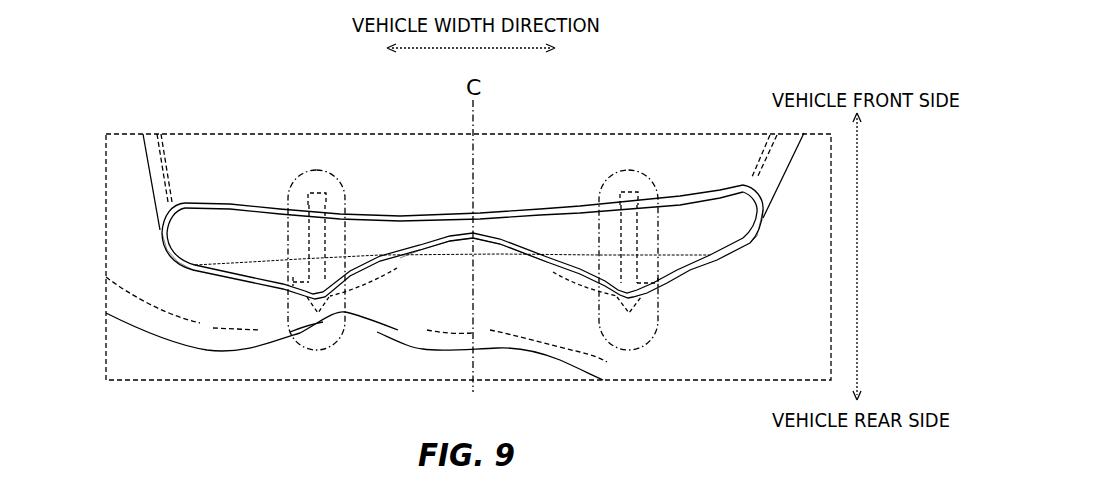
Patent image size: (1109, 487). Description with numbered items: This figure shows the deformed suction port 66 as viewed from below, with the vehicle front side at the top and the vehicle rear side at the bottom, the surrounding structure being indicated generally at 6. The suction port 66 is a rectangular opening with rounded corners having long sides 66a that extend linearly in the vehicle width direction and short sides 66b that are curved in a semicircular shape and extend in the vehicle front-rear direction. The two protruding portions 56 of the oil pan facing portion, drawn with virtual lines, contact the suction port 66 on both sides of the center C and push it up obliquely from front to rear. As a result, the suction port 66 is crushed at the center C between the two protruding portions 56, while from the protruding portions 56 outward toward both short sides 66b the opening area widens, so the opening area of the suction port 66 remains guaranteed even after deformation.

The vehicle body 6 is at (140, 170).
The protruding portion 56 is at (322, 170).
The suction port 66 is at (186, 272).
The long side 66a is at (458, 217).
The short side 66b is at (158, 230).